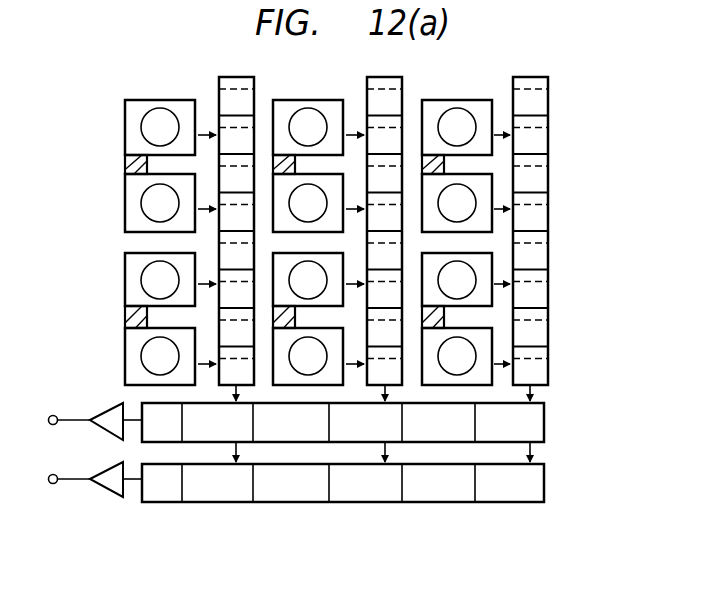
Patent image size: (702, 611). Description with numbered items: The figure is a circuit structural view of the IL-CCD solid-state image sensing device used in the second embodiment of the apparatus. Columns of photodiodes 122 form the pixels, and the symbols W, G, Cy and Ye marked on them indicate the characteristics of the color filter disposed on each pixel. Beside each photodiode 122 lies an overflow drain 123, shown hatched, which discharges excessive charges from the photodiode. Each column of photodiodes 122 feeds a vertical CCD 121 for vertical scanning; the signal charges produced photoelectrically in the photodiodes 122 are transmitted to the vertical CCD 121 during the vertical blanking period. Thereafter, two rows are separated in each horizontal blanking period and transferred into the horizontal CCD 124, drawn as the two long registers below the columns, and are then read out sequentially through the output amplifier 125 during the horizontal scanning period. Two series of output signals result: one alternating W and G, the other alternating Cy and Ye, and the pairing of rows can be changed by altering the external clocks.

The vertical CCD 121 is at (548, 188).
The photodiode 122 is at (125, 212).
The overflow drain 123 is at (125, 165).
The horizontal CCD 124 is at (545, 430).
The output amplifier 125 is at (108, 408).